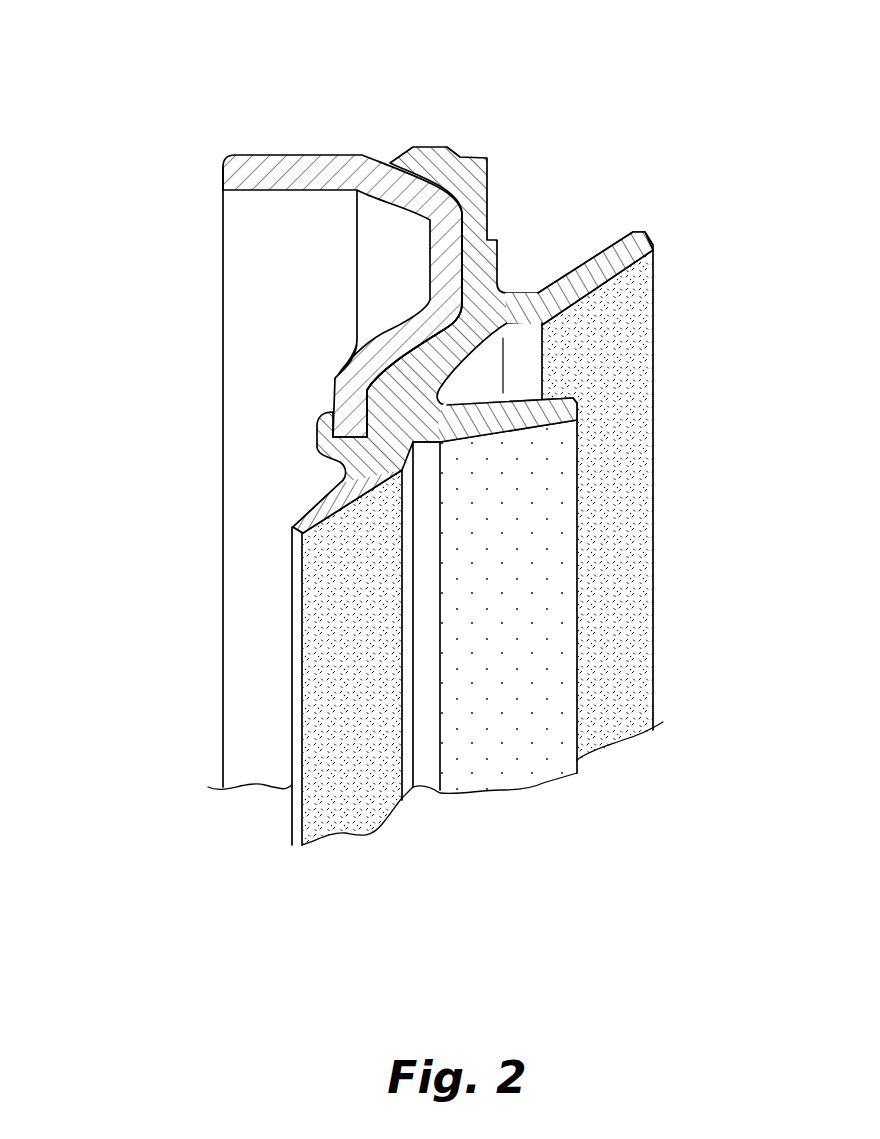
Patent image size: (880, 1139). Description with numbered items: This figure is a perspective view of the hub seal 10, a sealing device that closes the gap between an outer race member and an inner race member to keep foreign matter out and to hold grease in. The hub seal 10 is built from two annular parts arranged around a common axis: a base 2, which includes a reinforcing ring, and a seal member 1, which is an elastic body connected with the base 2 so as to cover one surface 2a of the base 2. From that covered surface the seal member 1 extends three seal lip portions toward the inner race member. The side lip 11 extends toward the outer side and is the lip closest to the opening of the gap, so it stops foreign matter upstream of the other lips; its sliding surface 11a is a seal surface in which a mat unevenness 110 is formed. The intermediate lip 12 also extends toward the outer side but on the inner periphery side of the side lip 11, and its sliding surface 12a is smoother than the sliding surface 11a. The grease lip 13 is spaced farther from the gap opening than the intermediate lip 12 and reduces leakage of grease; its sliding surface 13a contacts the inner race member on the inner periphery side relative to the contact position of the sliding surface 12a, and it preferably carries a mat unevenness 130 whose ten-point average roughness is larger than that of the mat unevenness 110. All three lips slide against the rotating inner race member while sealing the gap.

The hub seal 10 is at (450, 28).
The seal member 1 is at (448, 477).
The base 2 is at (383, 416).
The one surface of the base 2a is at (463, 265).
The side lip 11 is at (630, 447).
The sliding surface of the side lip 11a is at (633, 447).
The mat unevenness 110 is at (630, 520).
The intermediate lip 12 is at (562, 591).
The sliding surface of the intermediate lip 12a is at (515, 688).
The grease lip 13 is at (271, 660).
The sliding surface of the grease lip 13a is at (333, 720).
The mat unevenness 130 is at (337, 748).